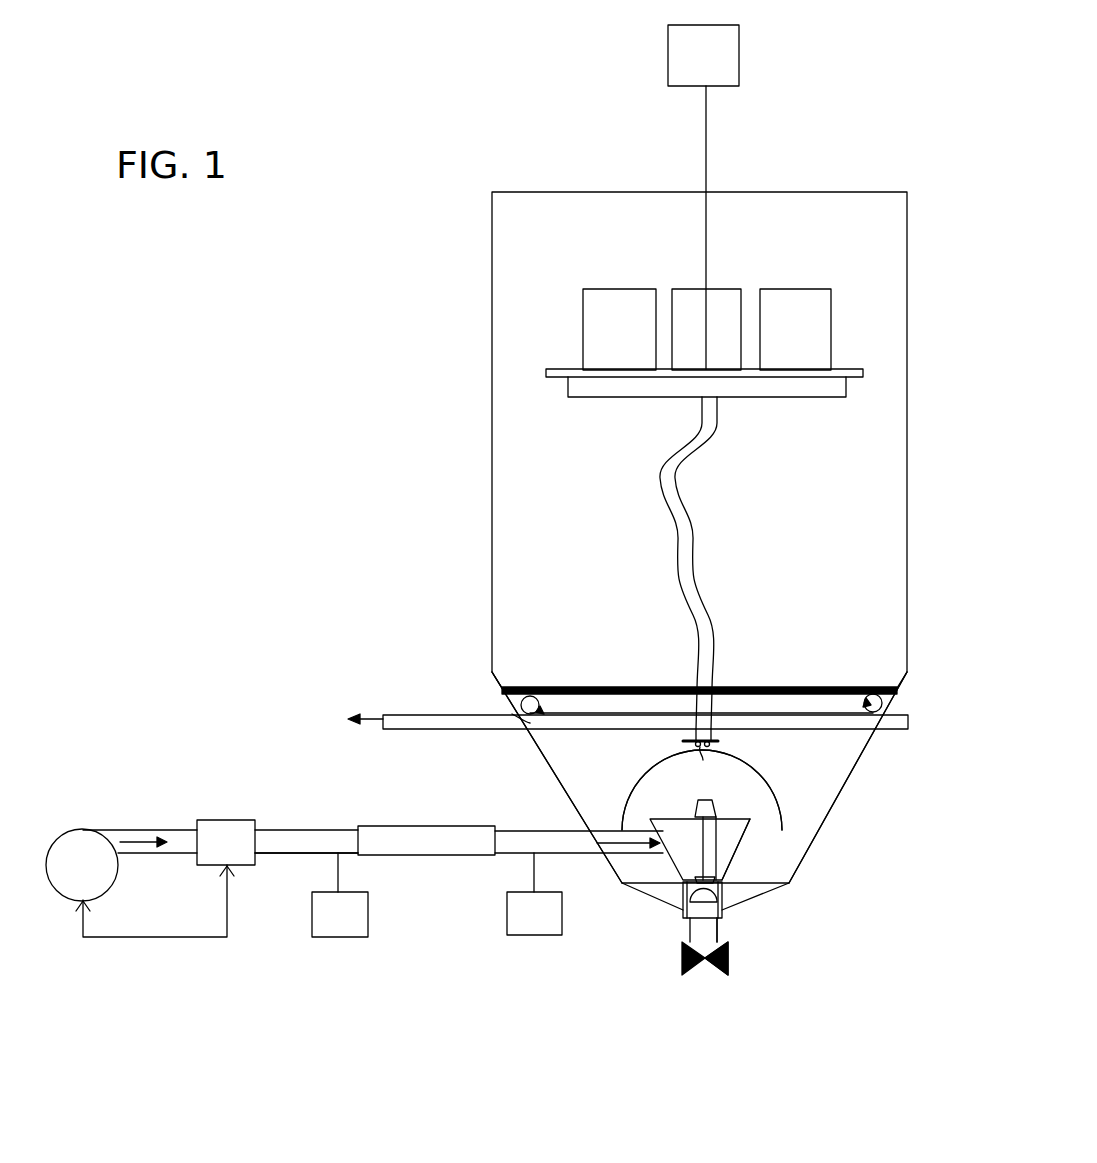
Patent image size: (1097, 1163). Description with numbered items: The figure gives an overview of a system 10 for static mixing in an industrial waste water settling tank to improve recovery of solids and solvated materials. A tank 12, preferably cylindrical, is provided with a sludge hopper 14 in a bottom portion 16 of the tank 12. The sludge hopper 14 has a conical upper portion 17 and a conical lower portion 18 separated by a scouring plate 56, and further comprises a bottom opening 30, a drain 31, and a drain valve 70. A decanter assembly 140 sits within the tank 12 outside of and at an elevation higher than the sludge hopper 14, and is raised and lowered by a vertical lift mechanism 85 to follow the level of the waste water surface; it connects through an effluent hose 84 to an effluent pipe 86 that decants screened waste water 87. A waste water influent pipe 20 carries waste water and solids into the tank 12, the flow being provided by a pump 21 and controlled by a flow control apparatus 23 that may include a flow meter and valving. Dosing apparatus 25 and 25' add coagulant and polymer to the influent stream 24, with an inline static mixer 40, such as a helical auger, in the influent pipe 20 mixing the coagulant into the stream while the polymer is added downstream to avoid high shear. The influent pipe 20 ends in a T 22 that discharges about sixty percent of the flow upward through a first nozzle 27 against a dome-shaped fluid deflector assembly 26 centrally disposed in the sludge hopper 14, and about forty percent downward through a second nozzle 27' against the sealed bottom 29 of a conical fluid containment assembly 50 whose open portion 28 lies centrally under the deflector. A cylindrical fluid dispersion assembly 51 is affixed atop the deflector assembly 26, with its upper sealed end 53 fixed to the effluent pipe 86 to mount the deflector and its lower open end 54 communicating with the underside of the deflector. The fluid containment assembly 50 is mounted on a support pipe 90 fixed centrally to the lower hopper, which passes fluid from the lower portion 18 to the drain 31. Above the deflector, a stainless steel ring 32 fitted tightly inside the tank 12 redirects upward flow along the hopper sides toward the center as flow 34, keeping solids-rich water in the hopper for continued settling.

The system 10 is at (440, 386).
The tank 12 is at (491, 565).
The sludge hopper 14 is at (842, 802).
The bottom portion 16 is at (537, 779).
The upper portion 17 is at (835, 750).
The lower portion 18 is at (643, 890).
The waste water influent pipe 20 is at (285, 855).
The pump 21 is at (83, 829).
The T 22 is at (718, 857).
The flow control apparatus 23 is at (222, 820).
The influent stream 24 is at (145, 833).
The dosing apparatus 25 is at (340, 942).
The dosing apparatus 25' is at (534, 943).
The fluid deflector assembly 26 is at (775, 802).
The first nozzle 27 is at (727, 828).
The second nozzle 27' is at (737, 878).
The open portion 28 is at (693, 827).
The sealed bottom 29 is at (720, 926).
The bottom opening 30 is at (698, 915).
The drain 31 is at (727, 940).
The ring 32 is at (585, 686).
The flow 34 is at (512, 714).
The inline static mixer 40 is at (427, 857).
The fluid containment assembly 50 is at (747, 837).
The fluid dispersion assembly 51 is at (720, 747).
The upper sealed end 53 is at (720, 733).
The lower open end 54 is at (703, 752).
The scouring plate 56 is at (770, 887).
The drain valve 70 is at (683, 957).
The effluent hose 84 is at (693, 537).
The vertical lift mechanism 85 is at (739, 57).
The effluent pipe 86 is at (422, 718).
The screened waste water 87 is at (375, 722).
The support pipe 90 is at (681, 907).
The decanter assembly 140 is at (553, 336).